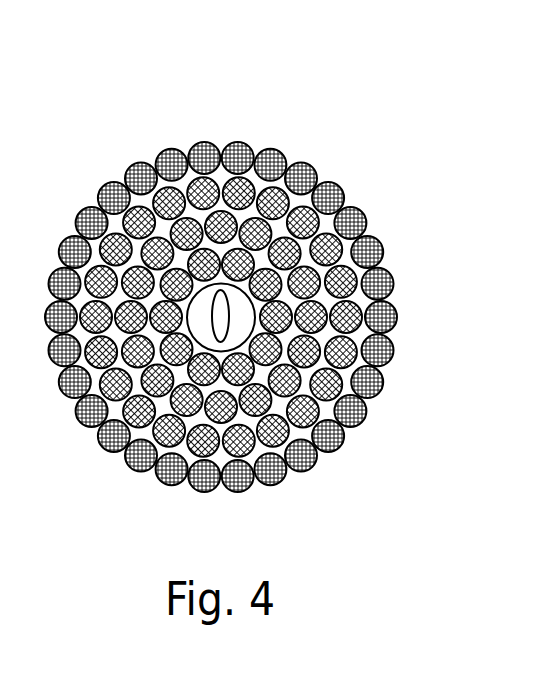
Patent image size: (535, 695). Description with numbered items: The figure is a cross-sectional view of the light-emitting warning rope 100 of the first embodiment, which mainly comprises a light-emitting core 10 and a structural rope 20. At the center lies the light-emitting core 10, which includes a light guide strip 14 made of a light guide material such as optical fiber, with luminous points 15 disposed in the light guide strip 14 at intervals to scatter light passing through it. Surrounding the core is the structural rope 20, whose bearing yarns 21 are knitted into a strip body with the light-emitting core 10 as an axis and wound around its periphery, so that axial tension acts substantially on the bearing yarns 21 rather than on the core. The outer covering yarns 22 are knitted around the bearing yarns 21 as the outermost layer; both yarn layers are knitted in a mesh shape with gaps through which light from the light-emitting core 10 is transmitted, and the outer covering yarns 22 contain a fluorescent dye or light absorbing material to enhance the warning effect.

The light-emitting warning rope 100 is at (78, 142).
The light-emitting core 10 is at (254, 292).
The light guide strip 14 is at (242, 320).
The luminous points 15 is at (223, 330).
The structural rope 20 is at (422, 122).
The bearing yarns 21 is at (300, 222).
The outer covering yarns 22 is at (308, 174).